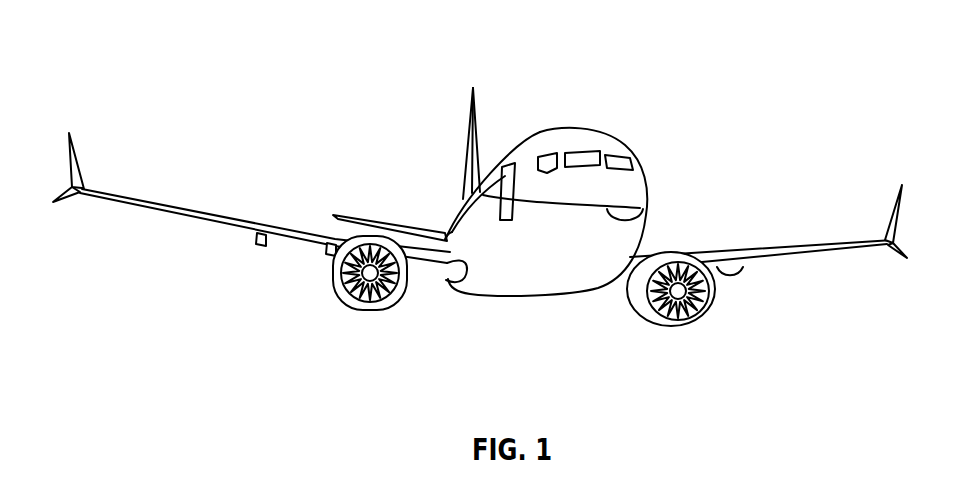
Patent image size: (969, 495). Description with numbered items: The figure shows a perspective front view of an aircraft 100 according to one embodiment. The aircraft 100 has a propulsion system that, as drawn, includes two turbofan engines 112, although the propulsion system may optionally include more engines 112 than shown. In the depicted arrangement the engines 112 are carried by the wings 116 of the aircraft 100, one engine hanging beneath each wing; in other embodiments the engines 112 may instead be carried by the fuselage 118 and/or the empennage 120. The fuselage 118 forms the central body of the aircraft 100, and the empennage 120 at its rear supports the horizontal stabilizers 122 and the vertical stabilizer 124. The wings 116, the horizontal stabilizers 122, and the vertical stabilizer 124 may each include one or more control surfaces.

The aircraft 100 is at (283, 64).
The turbofan engines 112 is at (367, 308).
The wings 116 is at (193, 212).
The fuselage 118 is at (650, 205).
The empennage 120 is at (460, 192).
The horizontal stabilizers 122 is at (358, 219).
The vertical stabilizer 124 is at (468, 121).